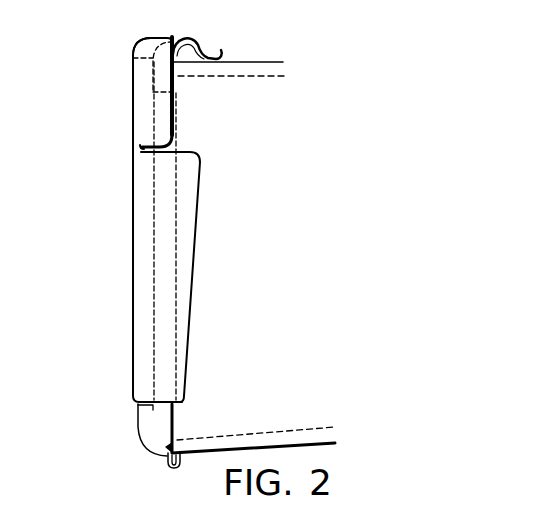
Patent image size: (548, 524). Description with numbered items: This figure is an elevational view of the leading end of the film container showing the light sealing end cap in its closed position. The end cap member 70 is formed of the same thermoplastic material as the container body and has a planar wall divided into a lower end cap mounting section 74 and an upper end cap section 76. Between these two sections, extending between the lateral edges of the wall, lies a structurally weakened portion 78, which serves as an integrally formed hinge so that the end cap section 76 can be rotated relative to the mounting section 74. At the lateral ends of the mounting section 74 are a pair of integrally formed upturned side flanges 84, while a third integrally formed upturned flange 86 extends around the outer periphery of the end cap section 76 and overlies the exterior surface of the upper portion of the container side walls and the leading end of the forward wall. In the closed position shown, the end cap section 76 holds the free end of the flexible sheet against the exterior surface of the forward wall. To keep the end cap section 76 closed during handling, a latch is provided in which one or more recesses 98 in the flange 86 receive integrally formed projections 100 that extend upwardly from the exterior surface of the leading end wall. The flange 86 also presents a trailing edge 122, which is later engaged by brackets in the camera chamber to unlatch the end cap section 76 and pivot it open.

The end cap member 70 is at (120, 92).
The end cap mounting section 74 is at (133, 347).
The end cap section 76 is at (133, 71).
The structurally weakened portion 78 is at (133, 150).
The upturned side flanges 84 is at (192, 222).
The upturned flange 86 is at (150, 38).
The recesses 98 is at (167, 35).
The projections 100 is at (176, 72).
The trailing edge 122 is at (174, 114).